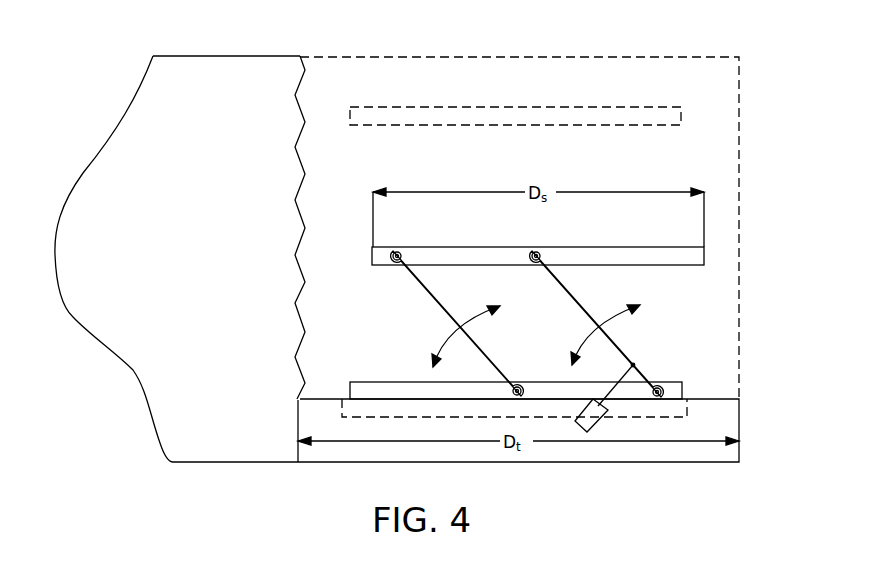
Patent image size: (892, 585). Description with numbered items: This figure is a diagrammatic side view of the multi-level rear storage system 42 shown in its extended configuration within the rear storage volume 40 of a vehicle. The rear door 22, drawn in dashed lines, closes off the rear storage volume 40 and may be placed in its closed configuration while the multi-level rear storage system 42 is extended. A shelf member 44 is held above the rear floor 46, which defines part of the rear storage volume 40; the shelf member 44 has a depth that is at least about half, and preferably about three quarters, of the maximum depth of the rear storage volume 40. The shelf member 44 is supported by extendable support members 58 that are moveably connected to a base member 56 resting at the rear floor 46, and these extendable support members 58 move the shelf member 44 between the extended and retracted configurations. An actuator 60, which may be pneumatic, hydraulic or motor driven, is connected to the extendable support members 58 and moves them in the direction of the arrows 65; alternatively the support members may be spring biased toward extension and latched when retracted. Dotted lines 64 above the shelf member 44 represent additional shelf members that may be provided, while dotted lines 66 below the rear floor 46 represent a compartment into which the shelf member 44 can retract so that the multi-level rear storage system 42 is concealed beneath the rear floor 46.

The rear door 22 is at (606, 57).
The rear storage volume 40 is at (700, 175).
The multi-level rear storage system 42 is at (746, 222).
The shelf member 44 is at (686, 265).
The rear floor 46 is at (316, 399).
The base member 56 is at (627, 390).
The extendable support members 58 is at (412, 282).
The actuator 60 is at (586, 445).
The dotted lines 64 is at (438, 107).
The arrows 65 is at (496, 306).
The dotted lines 66 is at (687, 403).